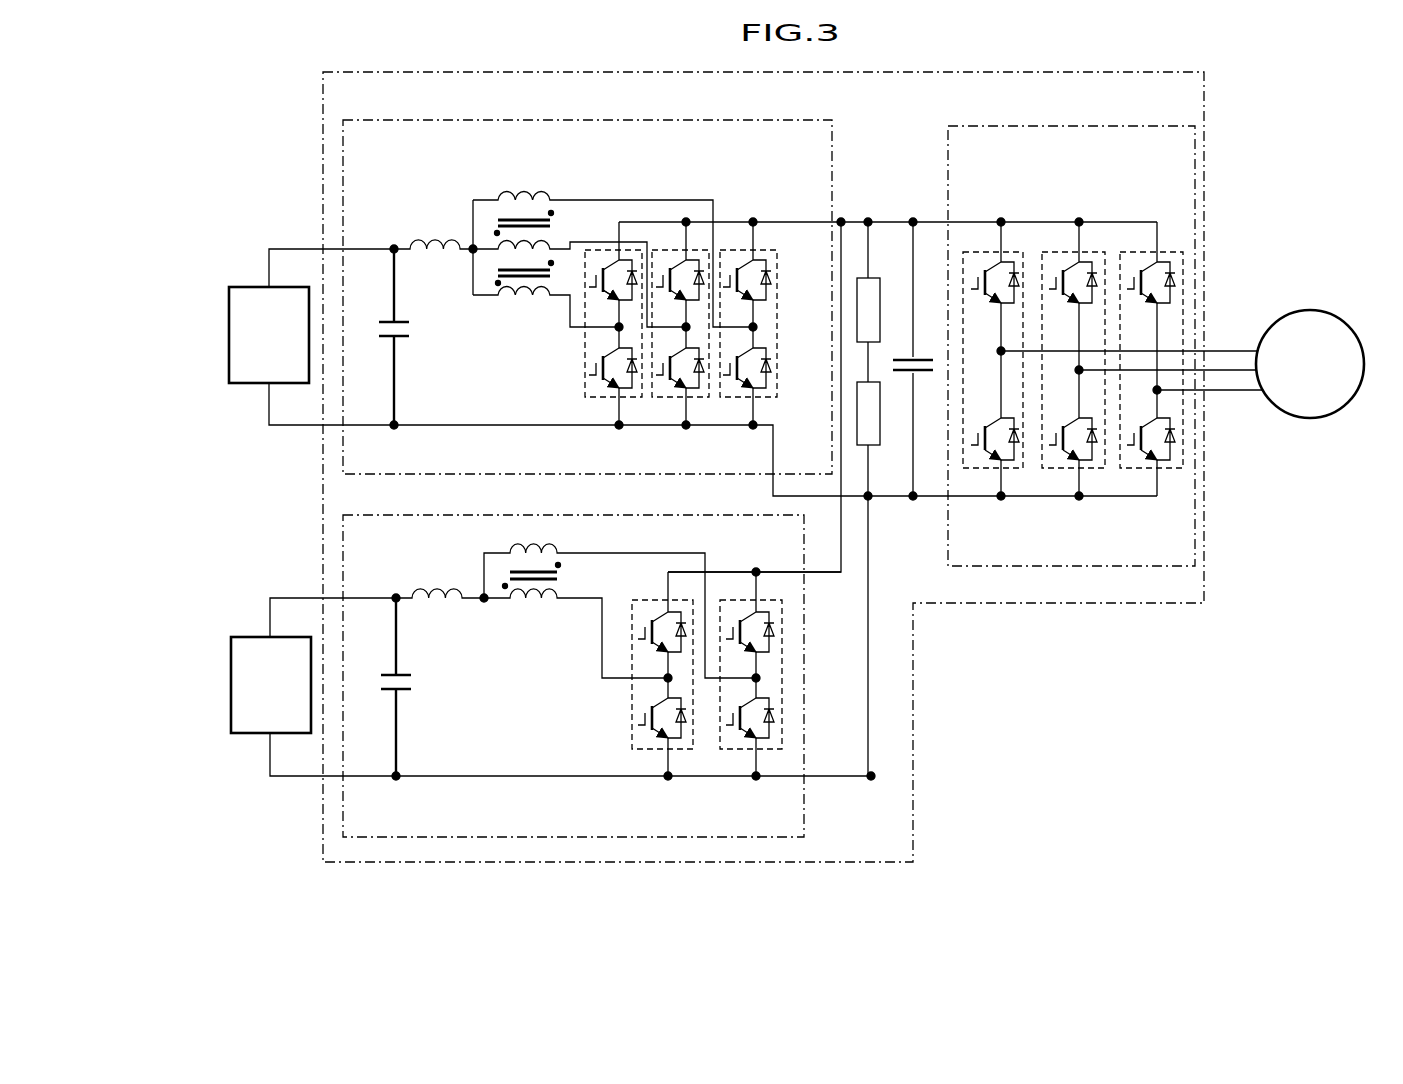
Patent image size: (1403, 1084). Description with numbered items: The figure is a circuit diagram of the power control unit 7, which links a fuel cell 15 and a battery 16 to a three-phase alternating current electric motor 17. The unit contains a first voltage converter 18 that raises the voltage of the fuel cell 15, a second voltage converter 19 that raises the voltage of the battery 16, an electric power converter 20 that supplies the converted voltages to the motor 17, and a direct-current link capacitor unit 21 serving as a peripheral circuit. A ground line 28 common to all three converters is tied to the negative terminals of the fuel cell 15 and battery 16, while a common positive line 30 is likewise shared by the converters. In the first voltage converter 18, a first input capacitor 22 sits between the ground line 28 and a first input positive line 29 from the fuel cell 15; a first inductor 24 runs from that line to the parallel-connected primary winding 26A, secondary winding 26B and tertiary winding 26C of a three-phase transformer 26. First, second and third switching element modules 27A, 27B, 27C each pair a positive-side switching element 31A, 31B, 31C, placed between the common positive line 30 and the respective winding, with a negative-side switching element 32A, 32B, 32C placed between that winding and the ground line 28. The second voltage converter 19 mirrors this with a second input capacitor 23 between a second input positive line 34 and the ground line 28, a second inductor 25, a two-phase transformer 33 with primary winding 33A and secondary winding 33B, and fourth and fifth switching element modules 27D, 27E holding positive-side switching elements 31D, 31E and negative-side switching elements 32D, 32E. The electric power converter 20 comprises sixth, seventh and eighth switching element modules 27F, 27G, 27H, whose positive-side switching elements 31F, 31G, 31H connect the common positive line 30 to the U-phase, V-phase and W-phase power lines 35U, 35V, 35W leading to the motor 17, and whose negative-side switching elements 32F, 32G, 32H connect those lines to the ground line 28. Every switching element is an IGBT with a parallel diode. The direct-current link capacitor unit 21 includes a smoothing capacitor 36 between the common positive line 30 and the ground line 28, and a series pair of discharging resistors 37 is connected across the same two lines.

The power control unit 7 is at (913, 708).
The fuel cell 15 is at (283, 347).
The battery 16 is at (285, 697).
The electric motor 17 is at (1324, 376).
The first voltage converter 18 is at (715, 118).
The second voltage converter 19 is at (806, 798).
The electric power converter 20 is at (1093, 125).
The direct-current link capacitor unit 21 is at (935, 222).
The first input capacitor 22 is at (405, 337).
The second input capacitor 23 is at (405, 690).
The first inductor 24 is at (425, 247).
The second inductor 25 is at (418, 597).
The three-phase transformer 26 is at (606, 231).
The primary winding 26A is at (518, 196).
The secondary winding 26B is at (543, 252).
The tertiary winding 26C is at (515, 300).
The first switching element module 27A is at (773, 318).
The second switching element module 27B is at (686, 316).
The third switching element module 27C is at (596, 293).
The fourth switching element module 27D is at (783, 672).
The fifth switching element module 27E is at (630, 687).
The sixth switching element module 27F is at (995, 341).
The seventh switching element module 27G is at (1076, 341).
The eighth switching element module 27H is at (1152, 353).
The ground line 28 is at (537, 427).
The first input positive line 29 is at (299, 248).
The common positive line 30 is at (675, 313).
The first positive-side switching element 31A is at (764, 258).
The second positive-side switching element 31B is at (697, 258).
The third positive-side switching element 31C is at (621, 258).
The fourth positive-side switching element 31D is at (748, 612).
The fifth positive-side switching element 31E is at (645, 612).
The sixth positive-side switching element 31F is at (1012, 258).
The seventh positive-side switching element 31G is at (1090, 258).
The eighth positive-side switching element 31H is at (1167, 258).
The first negative-side switching element 32A is at (776, 360).
The second negative-side switching element 32B is at (692, 390).
The third negative-side switching element 32C is at (602, 354).
The fourth negative-side switching element 32D is at (741, 740).
The fifth negative-side switching element 32E is at (658, 740).
The sixth negative-side switching element 32F is at (1010, 464).
The seventh negative-side switching element 32G is at (1089, 464).
The eighth negative-side switching element 32H is at (1165, 464).
The two-phase transformer 33 is at (598, 602).
The primary winding 33A is at (515, 550).
The secondary winding 33B is at (545, 607).
The second input positive line 34 is at (305, 597).
The U-phase power line 35U is at (1228, 349).
The V-phase power line 35V is at (1238, 368).
The W-phase power line 35W is at (1238, 395).
The smoothing capacitor 36 is at (925, 355).
The discharging resistor 37 is at (877, 285).